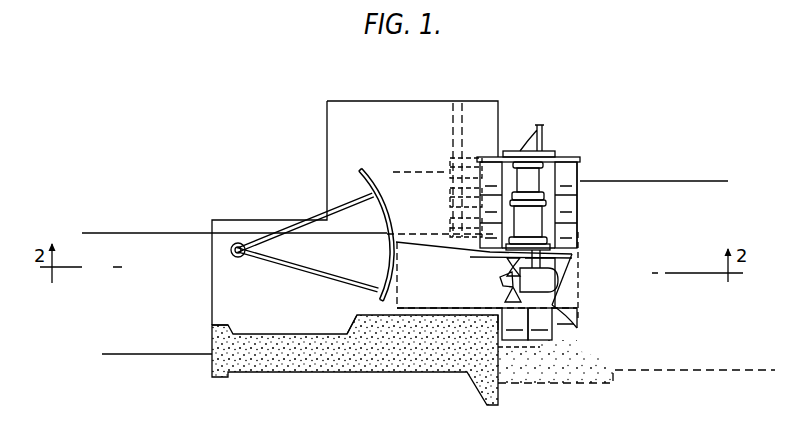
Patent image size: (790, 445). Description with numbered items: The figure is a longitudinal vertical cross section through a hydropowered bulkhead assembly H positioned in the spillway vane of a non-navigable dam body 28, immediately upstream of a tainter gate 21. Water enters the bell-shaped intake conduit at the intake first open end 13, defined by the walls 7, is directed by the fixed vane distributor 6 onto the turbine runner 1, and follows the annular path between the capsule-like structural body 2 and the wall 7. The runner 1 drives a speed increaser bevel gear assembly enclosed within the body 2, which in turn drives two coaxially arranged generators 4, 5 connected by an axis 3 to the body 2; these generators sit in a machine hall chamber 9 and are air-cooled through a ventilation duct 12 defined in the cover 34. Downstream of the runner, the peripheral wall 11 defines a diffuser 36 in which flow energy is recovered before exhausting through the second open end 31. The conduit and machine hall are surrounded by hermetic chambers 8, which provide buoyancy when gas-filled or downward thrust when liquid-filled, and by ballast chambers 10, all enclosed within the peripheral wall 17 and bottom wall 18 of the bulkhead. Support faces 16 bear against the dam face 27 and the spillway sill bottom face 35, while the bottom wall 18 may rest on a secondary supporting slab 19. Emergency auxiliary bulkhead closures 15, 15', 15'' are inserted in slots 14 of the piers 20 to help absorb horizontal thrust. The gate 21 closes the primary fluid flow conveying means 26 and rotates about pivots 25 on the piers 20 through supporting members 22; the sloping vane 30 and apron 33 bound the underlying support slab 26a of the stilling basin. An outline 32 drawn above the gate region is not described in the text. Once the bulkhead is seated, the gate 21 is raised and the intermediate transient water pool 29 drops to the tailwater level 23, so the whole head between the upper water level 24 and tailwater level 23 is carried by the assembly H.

The turbine runner 1 is at (507, 263).
The structural body 2 is at (539, 280).
The axis 3 is at (562, 270).
The high speed rotational generator 4 is at (534, 221).
The generator 5 is at (534, 186).
The fixed vane distributor 6 is at (557, 300).
The walls 7 is at (573, 252).
The chambers 8 is at (528, 203).
The machine hall chamber 9 is at (553, 167).
The chambers 10 is at (539, 323).
The peripheral wall 11 is at (423, 245).
The ventilation duct 12 is at (540, 124).
The intake first open end 13 is at (592, 258).
The slots or recesses 14 is at (456, 103).
The emergency auxiliary bulkhead closure means 15 is at (451, 151).
The emergency auxiliary bulkhead closure means 15' is at (450, 194).
The emergency auxiliary bulkhead closure means 15'' is at (445, 221).
The support faces 16 is at (505, 381).
The peripheral wall 17 is at (578, 205).
The bottom wall 18 is at (441, 314).
The secondary supporting slab 19 is at (600, 385).
The piers 20 is at (408, 203).
The tainter gate 21 is at (360, 167).
The supporting members 22 is at (310, 213).
The tailwater level 23 is at (121, 229).
The upper water level 24 is at (680, 178).
The pivots 25 is at (236, 258).
The primary fluid flow conveying means 26 is at (317, 333).
The underlying support slab 26a is at (307, 357).
The face of the dam 27 is at (497, 323).
The dam body 28 is at (414, 348).
The intermediate transient water pool 29 is at (395, 168).
The vane 30 is at (352, 317).
The exhausting second open end 31 is at (400, 302).
The enclosure 32 is at (378, 100).
The apron 33 is at (230, 326).
The cover 34 is at (508, 151).
The spillway sill bottom face 35 is at (376, 341).
The diffuser 36 is at (470, 283).
The hydropowered bulkhead assembly H is at (595, 167).